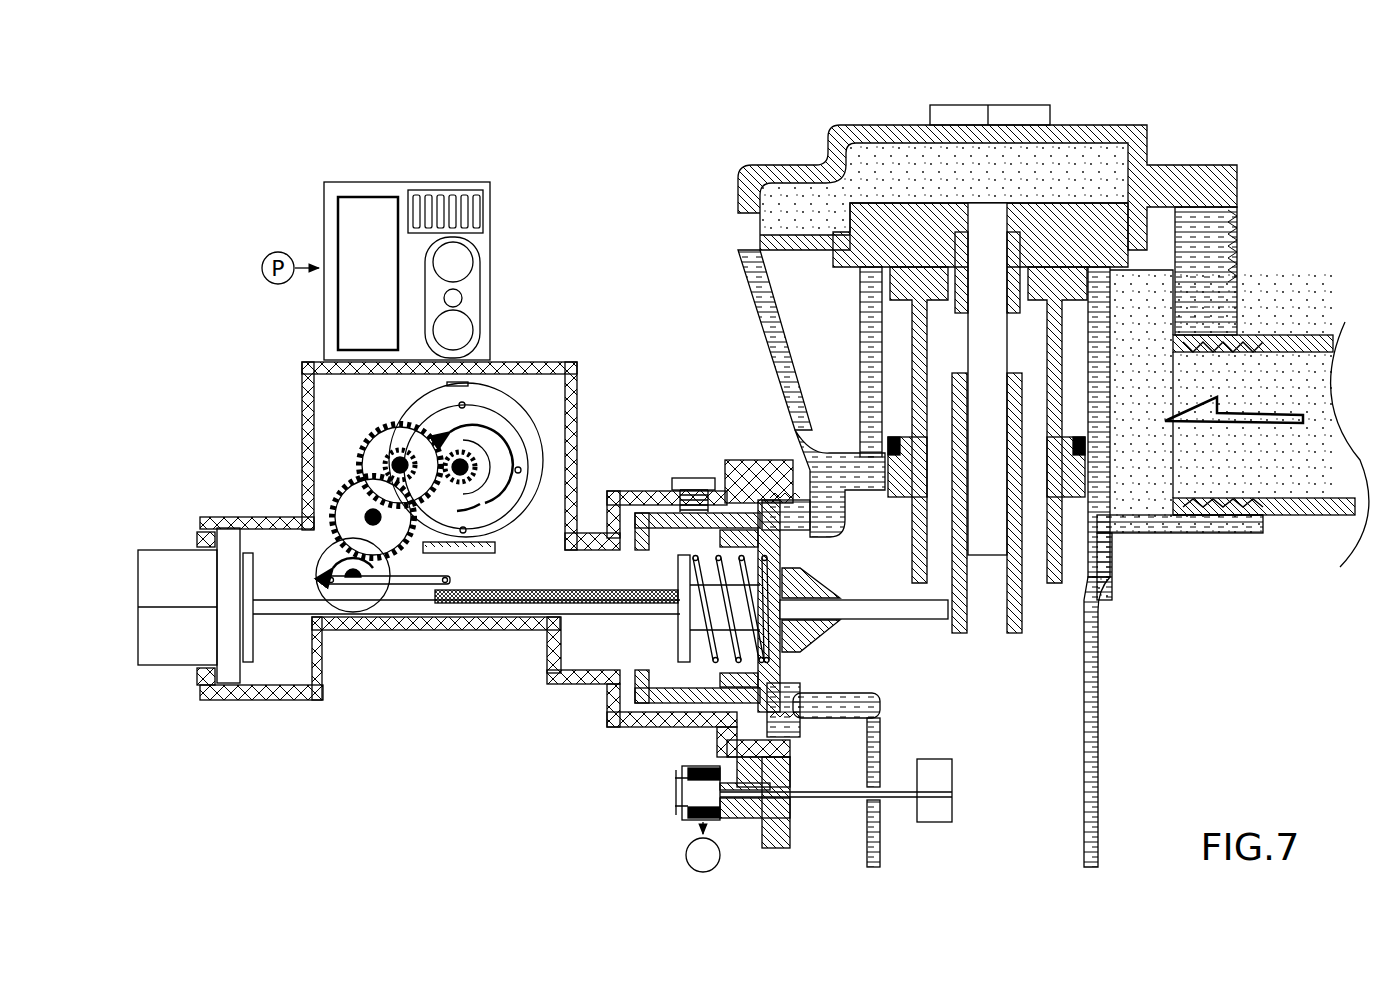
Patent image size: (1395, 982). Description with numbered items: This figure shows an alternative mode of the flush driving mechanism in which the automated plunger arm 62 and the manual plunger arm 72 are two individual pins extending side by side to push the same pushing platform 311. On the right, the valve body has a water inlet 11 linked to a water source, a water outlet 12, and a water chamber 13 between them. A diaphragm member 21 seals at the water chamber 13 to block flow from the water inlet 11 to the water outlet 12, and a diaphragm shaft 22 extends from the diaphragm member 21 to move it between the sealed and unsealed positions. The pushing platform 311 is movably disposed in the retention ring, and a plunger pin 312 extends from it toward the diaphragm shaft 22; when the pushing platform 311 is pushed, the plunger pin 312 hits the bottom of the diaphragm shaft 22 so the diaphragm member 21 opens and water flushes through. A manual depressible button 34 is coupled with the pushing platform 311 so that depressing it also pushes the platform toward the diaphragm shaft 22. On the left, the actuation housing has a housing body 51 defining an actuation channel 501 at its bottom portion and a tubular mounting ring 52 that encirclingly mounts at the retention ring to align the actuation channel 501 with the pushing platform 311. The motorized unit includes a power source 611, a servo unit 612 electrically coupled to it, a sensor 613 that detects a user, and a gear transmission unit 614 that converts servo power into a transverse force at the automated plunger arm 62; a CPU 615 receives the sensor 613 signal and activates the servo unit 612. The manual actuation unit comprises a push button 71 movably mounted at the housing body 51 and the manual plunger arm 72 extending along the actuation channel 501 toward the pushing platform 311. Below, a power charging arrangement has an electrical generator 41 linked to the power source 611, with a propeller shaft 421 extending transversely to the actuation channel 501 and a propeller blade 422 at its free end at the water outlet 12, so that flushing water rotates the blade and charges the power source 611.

The water inlet 11 is at (1265, 355).
The water outlet 12 is at (1050, 724).
The water chamber 13 is at (1114, 178).
The diaphragm member 21 is at (1077, 235).
The diaphragm shaft 22 is at (1013, 560).
The pushing platform 311 is at (683, 567).
The plunger pin 312 is at (930, 612).
The manual depressible button 34 is at (635, 645).
The electrical generator 41 is at (688, 800).
The propeller shaft 421 is at (830, 797).
The propeller blade 422 is at (940, 825).
The housing body 51 is at (301, 390).
The actuation channel 501 is at (288, 555).
The tubular mounting ring 52 is at (616, 500).
The power source 611 is at (357, 207).
The servo unit 612 is at (505, 408).
The sensor 613 is at (462, 262).
The gear transmission unit 614 is at (310, 602).
The CPU 615 is at (442, 193).
The automated plunger arm 62 is at (540, 612).
The push button 71 is at (198, 580).
The manual plunger arm 72 is at (512, 606).